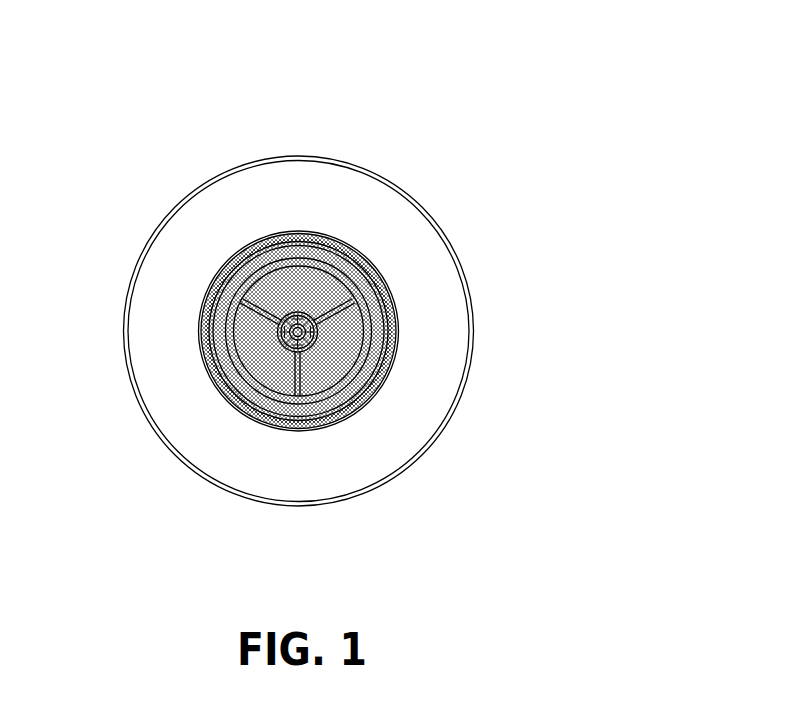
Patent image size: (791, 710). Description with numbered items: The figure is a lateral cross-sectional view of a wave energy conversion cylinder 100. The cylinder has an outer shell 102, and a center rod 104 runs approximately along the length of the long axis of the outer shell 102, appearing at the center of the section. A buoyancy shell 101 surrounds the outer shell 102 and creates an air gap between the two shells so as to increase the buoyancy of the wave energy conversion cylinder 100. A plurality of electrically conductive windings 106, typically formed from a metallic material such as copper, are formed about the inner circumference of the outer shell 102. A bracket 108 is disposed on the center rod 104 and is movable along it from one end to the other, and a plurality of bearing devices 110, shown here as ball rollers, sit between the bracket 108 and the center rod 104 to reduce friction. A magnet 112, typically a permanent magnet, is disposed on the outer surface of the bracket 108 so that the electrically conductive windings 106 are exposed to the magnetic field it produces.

The wave energy conversion cylinder 100 is at (632, 97).
The buoyancy shell 101 is at (423, 460).
The outer shell 102 is at (392, 367).
The center rod 104 is at (315, 333).
The electrically conductive windings 106 is at (392, 340).
The bracket 108 is at (295, 377).
The bearing devices 110 is at (302, 347).
The magnet 112 is at (225, 333).